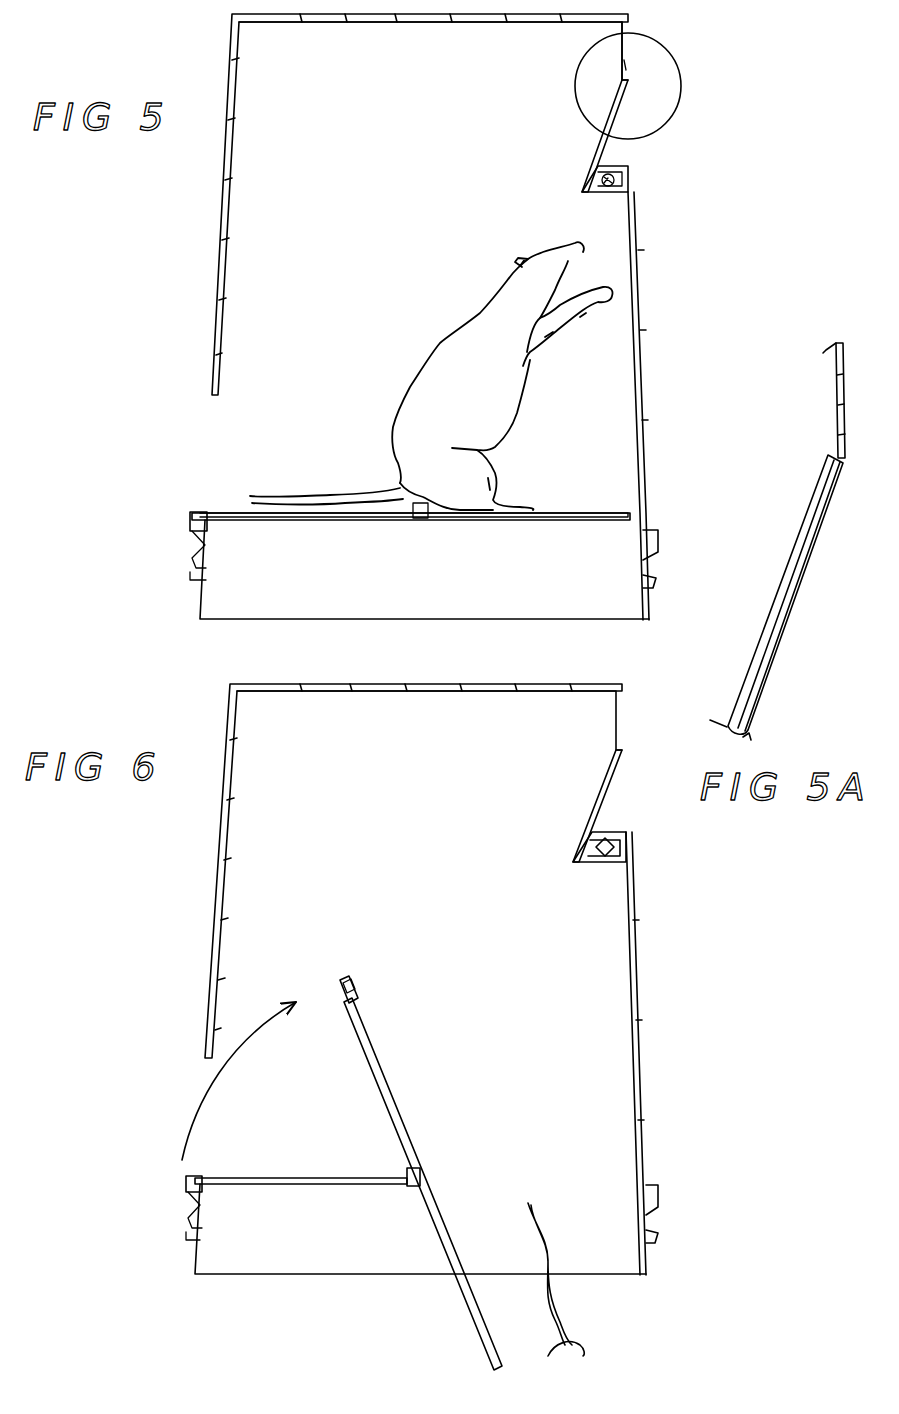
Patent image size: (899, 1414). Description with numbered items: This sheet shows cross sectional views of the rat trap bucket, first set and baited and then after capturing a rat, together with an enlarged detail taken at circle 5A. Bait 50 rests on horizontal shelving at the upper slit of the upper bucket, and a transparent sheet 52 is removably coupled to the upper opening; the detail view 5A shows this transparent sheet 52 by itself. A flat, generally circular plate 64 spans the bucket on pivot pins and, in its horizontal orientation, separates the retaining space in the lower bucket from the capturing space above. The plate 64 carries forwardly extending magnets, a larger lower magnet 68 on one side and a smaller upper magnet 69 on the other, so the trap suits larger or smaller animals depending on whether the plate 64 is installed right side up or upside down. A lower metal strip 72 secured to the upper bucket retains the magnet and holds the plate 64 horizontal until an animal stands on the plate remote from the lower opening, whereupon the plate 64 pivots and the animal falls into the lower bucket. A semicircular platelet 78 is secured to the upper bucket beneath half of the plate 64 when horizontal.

In FIG. 5, the bait 50 is at (612, 183).
In FIG. 5, the transparent sheet 52 is at (620, 127).
In FIG. 5A, the transparent sheet 52 is at (785, 608).
In FIG. 5, the enlarged detail circle 5A is at (681, 74).
In FIG. 5, the flat, generally circular plate 64 is at (497, 521).
In FIG. 6, the flat, generally circular plate 64 is at (405, 1115).
In FIG. 6, the larger lower magnet 68 is at (340, 990).
In FIG. 6, the smaller upper magnet 69 is at (355, 985).
In FIG. 5, the lower metal strip 72 is at (190, 522).
In FIG. 6, the lower metal strip 72 is at (190, 1180).
In FIG. 5, the semicircular platelet 78 is at (313, 524).
In FIG. 6, the semicircular platelet 78 is at (343, 1188).